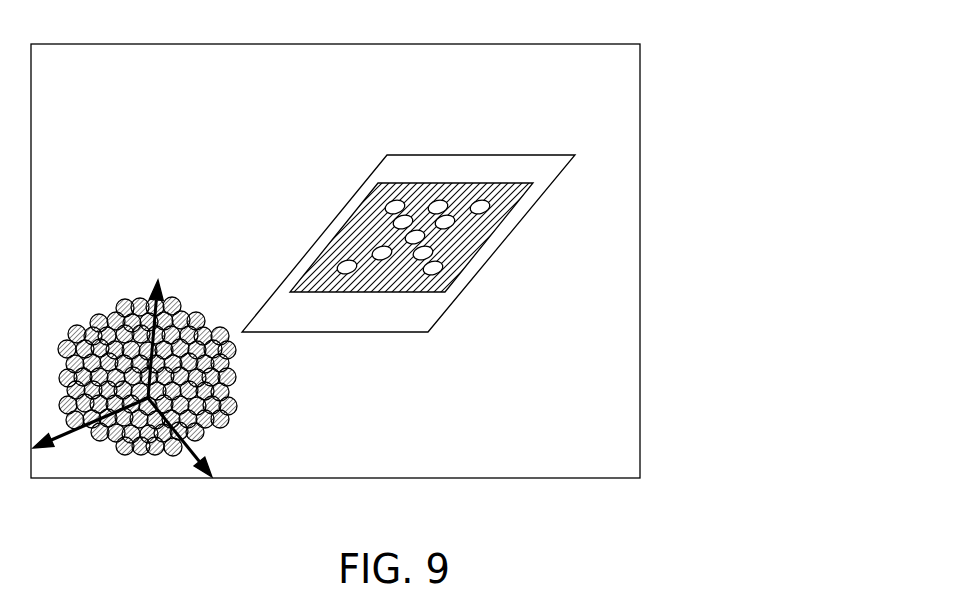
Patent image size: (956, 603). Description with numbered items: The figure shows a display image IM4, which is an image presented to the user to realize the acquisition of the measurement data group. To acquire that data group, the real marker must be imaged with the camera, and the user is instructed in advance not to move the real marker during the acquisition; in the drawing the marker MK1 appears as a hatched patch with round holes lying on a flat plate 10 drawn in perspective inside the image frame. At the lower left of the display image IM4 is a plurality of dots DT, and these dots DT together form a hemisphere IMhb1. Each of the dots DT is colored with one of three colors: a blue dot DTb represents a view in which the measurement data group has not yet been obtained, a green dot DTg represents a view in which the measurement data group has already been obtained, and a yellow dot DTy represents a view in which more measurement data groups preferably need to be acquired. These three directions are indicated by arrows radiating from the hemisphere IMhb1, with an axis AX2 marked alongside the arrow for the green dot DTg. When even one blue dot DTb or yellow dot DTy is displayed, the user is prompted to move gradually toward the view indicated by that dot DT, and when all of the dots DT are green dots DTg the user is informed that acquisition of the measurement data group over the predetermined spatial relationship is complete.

The display image IM4 is at (560, 44).
The object (plate) 10 is at (575, 155).
The marker MK1 is at (497, 232).
The hemisphere IMhb1 is at (111, 299).
The axis AX2 is at (219, 452).
The blue dot DTb is at (80, 435).
The yellow dot DTy is at (125, 440).
The green dot DTg is at (223, 455).
The dots DT is at (166, 419).